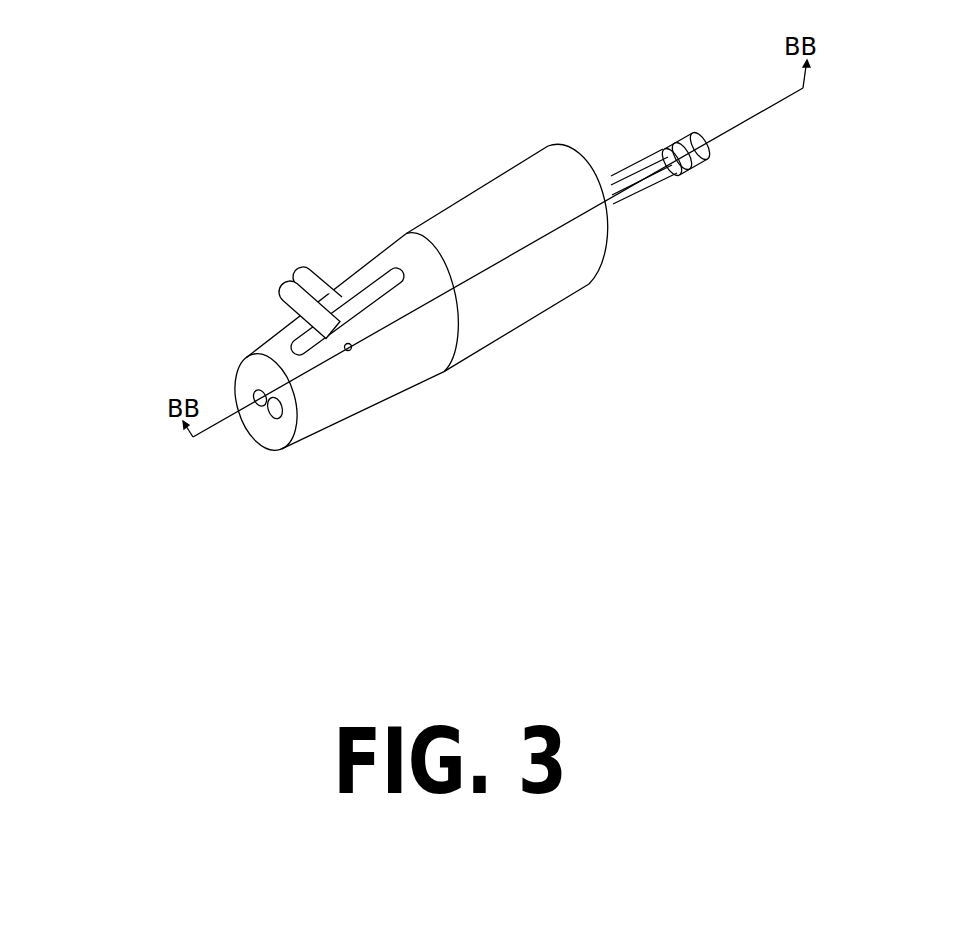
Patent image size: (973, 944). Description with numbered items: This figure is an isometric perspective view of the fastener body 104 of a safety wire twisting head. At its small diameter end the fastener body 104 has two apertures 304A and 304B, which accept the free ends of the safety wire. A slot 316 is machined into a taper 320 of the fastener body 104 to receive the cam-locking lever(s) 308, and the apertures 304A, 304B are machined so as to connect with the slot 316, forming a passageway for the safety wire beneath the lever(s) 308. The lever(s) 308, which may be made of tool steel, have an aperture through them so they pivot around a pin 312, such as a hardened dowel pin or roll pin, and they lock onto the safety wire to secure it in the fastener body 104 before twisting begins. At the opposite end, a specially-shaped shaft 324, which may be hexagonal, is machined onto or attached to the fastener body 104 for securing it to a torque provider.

The fastener body 104 is at (631, 427).
The aperture 304A is at (246, 419).
The aperture 304B is at (271, 436).
The lever(s) 308 is at (270, 272).
The pin 312 is at (358, 370).
The slot 316 is at (363, 269).
The taper 320 is at (324, 455).
The shaft 324 is at (630, 141).